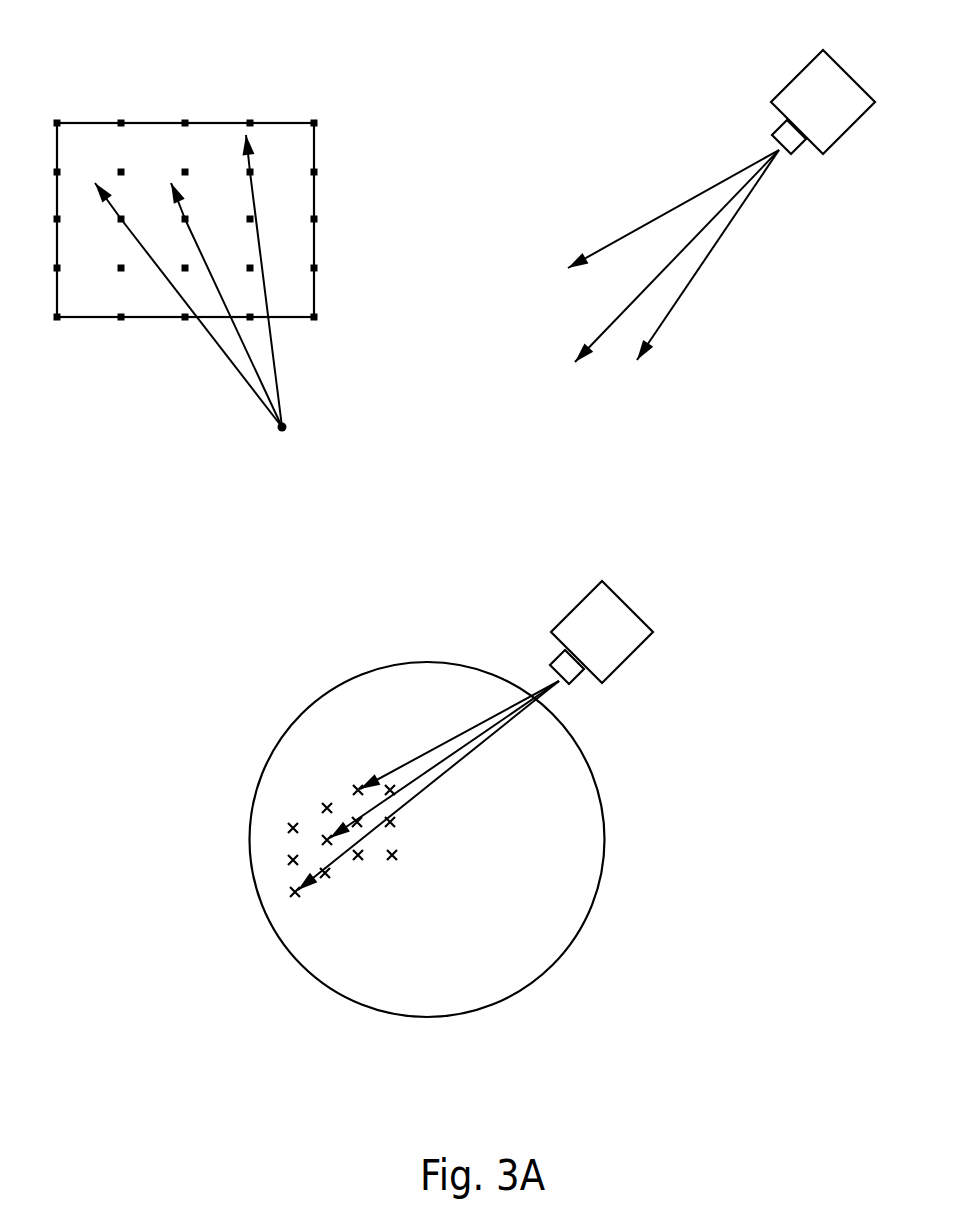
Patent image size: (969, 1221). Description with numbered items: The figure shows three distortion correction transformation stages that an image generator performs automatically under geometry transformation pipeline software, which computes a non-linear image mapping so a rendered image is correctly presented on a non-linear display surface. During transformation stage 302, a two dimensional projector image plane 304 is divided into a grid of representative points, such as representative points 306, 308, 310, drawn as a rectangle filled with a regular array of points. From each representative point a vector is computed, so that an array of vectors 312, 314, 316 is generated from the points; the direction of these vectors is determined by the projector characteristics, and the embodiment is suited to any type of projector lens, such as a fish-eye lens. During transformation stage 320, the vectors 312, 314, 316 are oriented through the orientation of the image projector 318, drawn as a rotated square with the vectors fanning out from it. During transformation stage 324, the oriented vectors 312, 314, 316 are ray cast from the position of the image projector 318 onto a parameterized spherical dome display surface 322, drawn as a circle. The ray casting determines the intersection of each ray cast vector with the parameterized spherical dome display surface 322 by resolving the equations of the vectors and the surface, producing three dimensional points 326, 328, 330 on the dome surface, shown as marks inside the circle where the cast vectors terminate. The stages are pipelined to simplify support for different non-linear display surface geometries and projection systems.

The transformation stage 302 is at (64, 75).
The two dimensional projector image plane 304 is at (276, 123).
The representative point 306 is at (124, 222).
The representative point 308 is at (184, 210).
The representative point 310 is at (252, 166).
The vector 312 is at (217, 343).
The vector 314 is at (252, 365).
The vector 316 is at (274, 365).
The image projector 318 is at (806, 114).
The transformation stage 320 is at (668, 73).
The parameterized spherical dome display surface 322 is at (603, 870).
The transformation stage 324 is at (331, 635).
The three dimensional point 326 is at (295, 895).
The three dimensional point 328 is at (325, 836).
The three dimensional point 330 is at (358, 783).